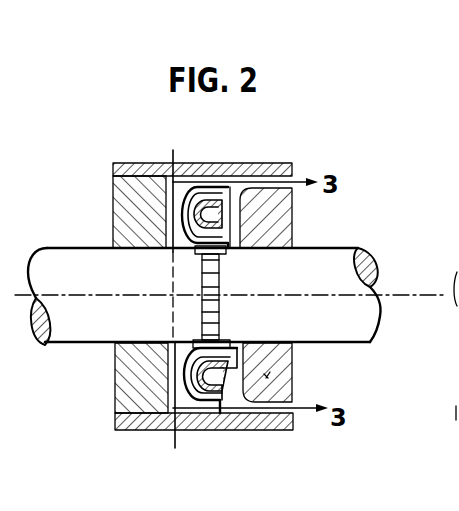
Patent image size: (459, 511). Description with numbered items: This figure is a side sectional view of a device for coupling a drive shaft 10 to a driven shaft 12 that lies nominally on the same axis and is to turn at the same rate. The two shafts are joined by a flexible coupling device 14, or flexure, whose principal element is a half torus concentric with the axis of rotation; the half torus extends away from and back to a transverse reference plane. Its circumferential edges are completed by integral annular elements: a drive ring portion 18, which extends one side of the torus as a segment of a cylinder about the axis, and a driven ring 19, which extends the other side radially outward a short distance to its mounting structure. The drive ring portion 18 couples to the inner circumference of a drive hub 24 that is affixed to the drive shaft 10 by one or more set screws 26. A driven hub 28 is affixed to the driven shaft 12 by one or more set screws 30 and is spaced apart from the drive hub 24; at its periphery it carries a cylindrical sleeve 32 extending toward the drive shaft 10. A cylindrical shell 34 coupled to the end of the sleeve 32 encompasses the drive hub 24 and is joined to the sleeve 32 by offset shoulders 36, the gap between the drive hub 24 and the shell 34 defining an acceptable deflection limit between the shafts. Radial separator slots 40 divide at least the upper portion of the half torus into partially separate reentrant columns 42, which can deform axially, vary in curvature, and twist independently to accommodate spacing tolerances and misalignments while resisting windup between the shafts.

The drive shaft 10 is at (370, 256).
The driven shaft 12 is at (36, 346).
The flexible coupling device 14 is at (191, 408).
The drive ring portion 18 is at (231, 190).
The driven ring 19 is at (224, 400).
The drive hub 24 is at (293, 224).
The set screws 26 is at (261, 400).
The driven hub 28 is at (115, 399).
The set screws 30 is at (137, 167).
The cylindrical sleeve 32 is at (180, 162).
The cylindrical shell 34 is at (280, 160).
The offset shoulders 36 is at (230, 170).
The radial separator slots 40 is at (173, 347).
The reentrant columns 42 is at (200, 192).